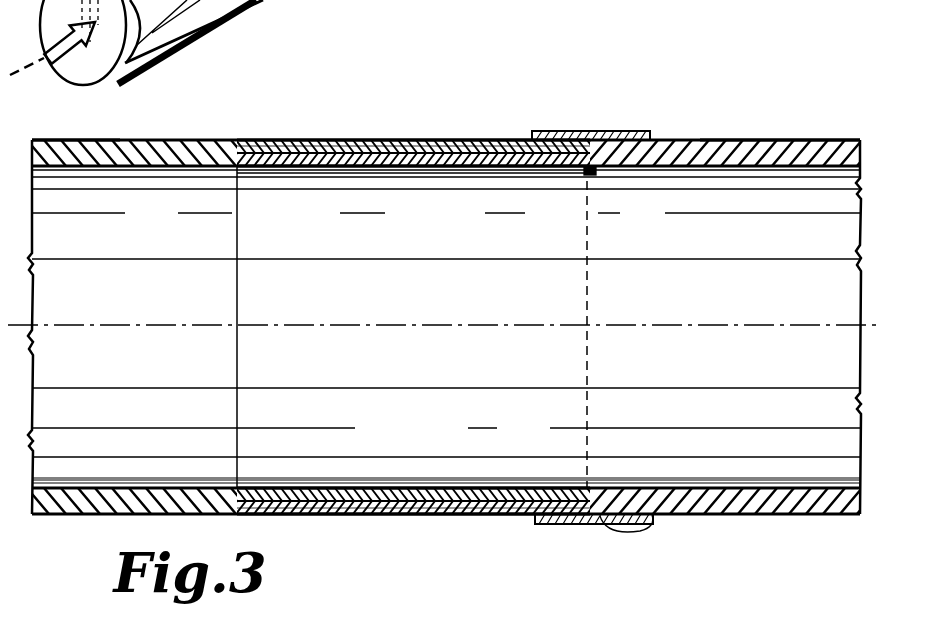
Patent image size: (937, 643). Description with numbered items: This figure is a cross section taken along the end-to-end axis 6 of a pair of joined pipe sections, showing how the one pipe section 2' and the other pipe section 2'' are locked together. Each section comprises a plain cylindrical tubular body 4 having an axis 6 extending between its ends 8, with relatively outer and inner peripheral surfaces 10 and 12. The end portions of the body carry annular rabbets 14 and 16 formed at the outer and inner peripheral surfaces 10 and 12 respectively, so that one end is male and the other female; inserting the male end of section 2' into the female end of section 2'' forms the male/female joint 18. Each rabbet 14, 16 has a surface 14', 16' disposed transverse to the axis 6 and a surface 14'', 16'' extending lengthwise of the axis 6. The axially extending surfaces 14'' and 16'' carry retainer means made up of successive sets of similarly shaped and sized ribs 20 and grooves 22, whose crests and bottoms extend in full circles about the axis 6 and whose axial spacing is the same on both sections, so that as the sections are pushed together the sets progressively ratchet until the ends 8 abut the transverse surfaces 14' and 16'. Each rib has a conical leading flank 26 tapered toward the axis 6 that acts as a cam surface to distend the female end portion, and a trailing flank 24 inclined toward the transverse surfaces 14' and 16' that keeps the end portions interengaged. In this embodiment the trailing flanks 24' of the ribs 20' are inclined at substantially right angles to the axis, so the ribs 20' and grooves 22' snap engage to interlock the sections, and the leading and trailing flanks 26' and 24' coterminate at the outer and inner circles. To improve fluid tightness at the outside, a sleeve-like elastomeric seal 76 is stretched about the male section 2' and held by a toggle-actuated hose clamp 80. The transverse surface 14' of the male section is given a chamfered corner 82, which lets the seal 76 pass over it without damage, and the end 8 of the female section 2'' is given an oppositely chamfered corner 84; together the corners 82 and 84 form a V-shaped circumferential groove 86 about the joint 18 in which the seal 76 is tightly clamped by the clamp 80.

The other pipe section 2'' is at (76, 112).
The one pipe section 2' is at (780, 105).
The tubular body 4 is at (172, 152).
The axis 6 is at (462, 328).
The ends 8 is at (262, 170).
The outer peripheral surface 10 is at (666, 150).
The inner peripheral surface 12 is at (142, 172).
The rabbet 14 is at (413, 537).
The transversely disposed surface of rabbet 14' is at (413, 105).
The axially extending surface of rabbet 14'' is at (446, 209).
The rabbet 16 is at (412, 467).
The transversely disposed surface of rabbet 16' is at (413, 198).
The axially extending surface of rabbet 16'' is at (413, 108).
The male/female joint 18 is at (592, 172).
The ribs 20 is at (413, 120).
The ribs 20' is at (558, 327).
The grooves 22 is at (413, 109).
The grooves 22' is at (446, 191).
The trailing flanks 24 is at (413, 544).
The trailing flanks 24' is at (413, 453).
The leading flanks 26 is at (412, 124).
The leading flanks 26' is at (413, 474).
The sleeve-like seal 76 is at (597, 524).
The toggle-actuated hose clamp 80 is at (612, 131).
The chamfered corner 82 is at (592, 140).
The chamfered corner 84 is at (585, 526).
The V-shaped circumferential groove 86 is at (648, 514).